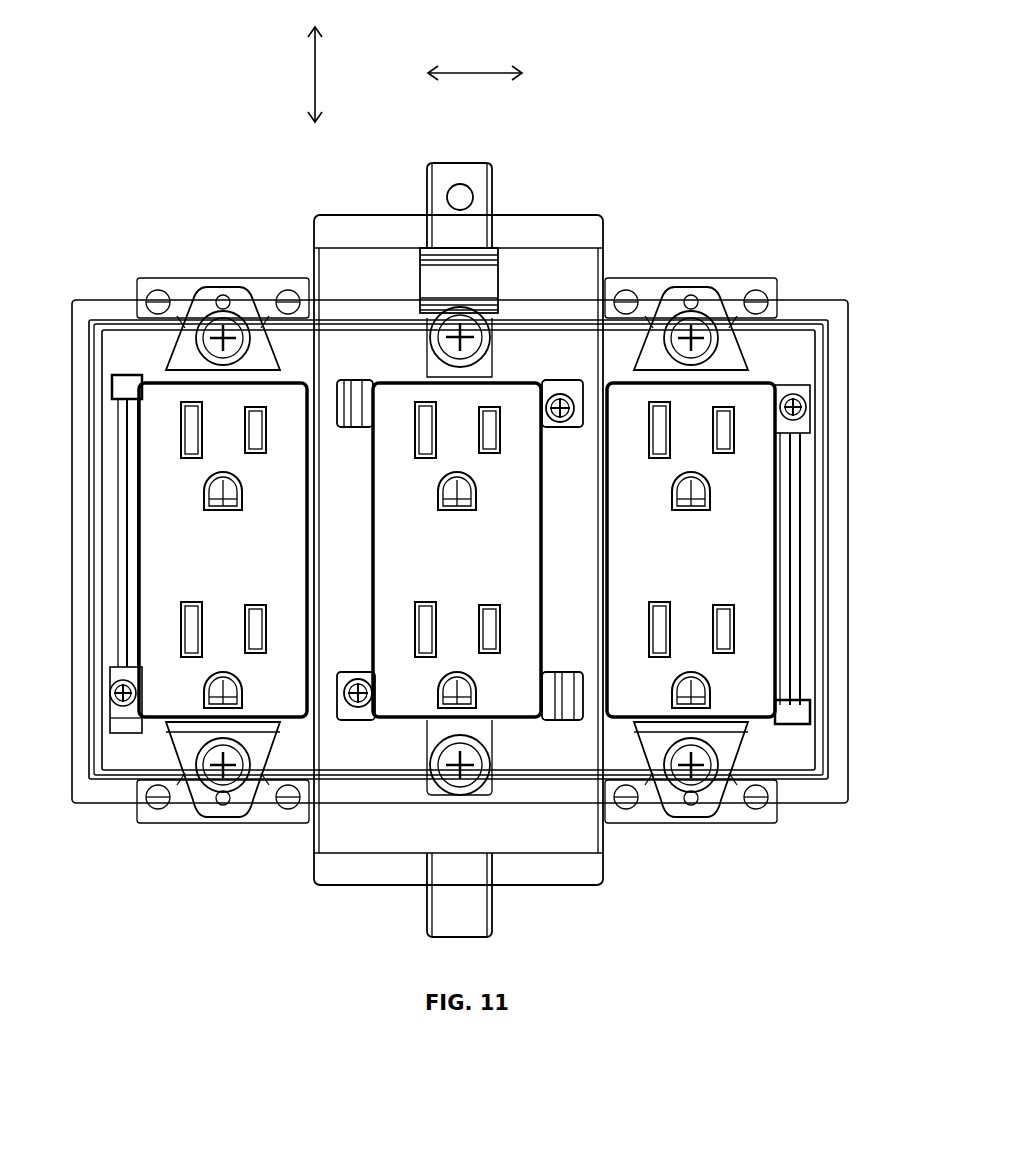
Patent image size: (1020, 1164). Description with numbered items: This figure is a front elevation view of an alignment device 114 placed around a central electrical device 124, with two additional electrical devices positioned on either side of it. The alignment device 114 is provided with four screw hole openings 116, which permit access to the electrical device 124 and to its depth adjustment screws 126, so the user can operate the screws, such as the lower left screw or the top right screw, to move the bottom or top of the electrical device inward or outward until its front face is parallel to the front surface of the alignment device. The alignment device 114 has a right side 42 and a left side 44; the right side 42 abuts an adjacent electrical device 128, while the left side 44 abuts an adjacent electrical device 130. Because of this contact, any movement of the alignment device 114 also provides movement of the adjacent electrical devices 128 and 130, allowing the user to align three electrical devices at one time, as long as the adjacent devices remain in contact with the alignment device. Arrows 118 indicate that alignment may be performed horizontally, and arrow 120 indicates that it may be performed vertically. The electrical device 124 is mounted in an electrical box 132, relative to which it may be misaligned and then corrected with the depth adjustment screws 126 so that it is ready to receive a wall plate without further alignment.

The alignment device 114 is at (578, 186).
The screw hole openings 116 is at (555, 397).
The arrows 118 is at (477, 73).
The arrow 120 is at (313, 72).
The right side 42 is at (603, 247).
The left side 44 is at (316, 248).
The electrical device 124 is at (397, 422).
The depth adjustment screws 126 is at (578, 383).
The adjacent electrical device 128 is at (752, 418).
The adjacent electrical device 130 is at (160, 407).
The electrical box 132 is at (838, 400).